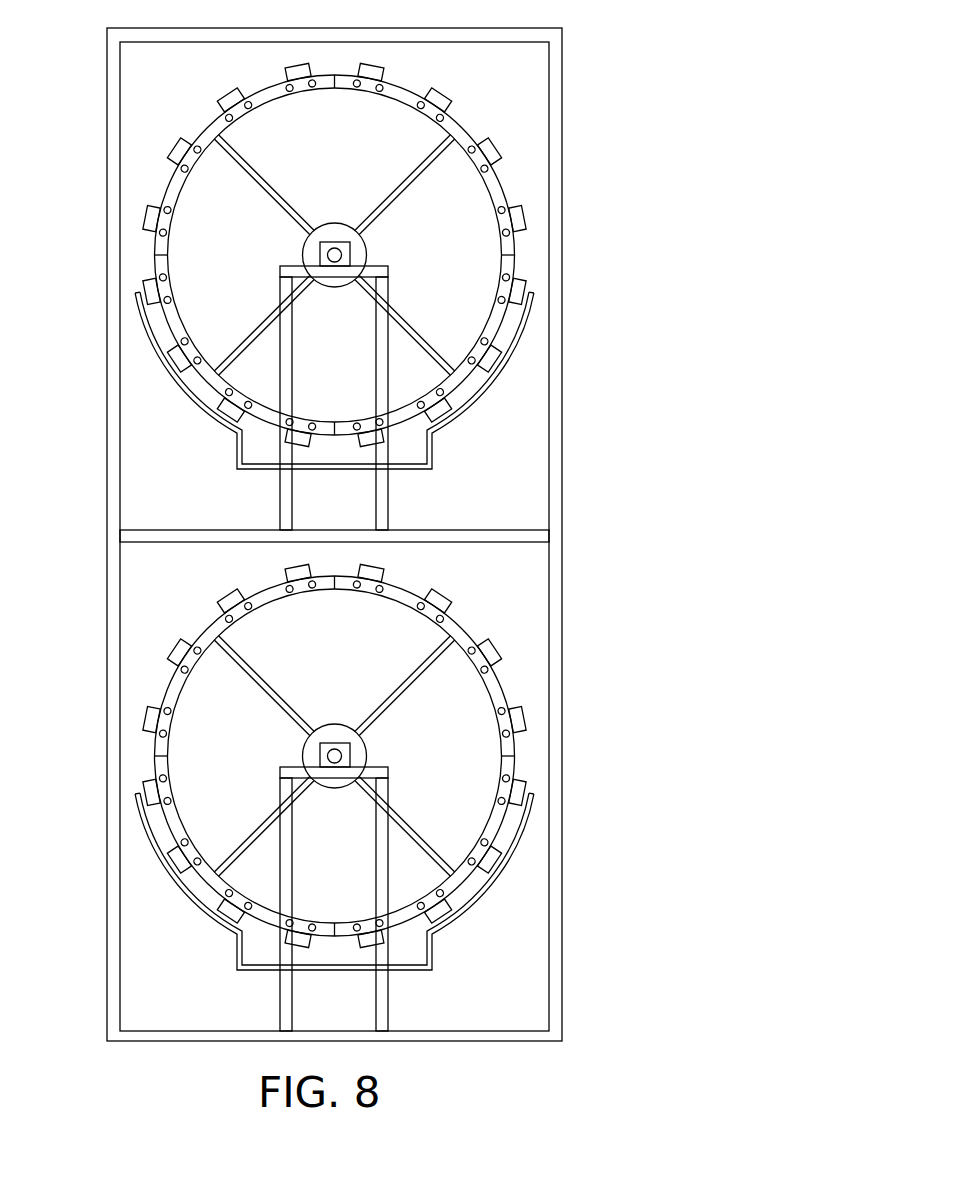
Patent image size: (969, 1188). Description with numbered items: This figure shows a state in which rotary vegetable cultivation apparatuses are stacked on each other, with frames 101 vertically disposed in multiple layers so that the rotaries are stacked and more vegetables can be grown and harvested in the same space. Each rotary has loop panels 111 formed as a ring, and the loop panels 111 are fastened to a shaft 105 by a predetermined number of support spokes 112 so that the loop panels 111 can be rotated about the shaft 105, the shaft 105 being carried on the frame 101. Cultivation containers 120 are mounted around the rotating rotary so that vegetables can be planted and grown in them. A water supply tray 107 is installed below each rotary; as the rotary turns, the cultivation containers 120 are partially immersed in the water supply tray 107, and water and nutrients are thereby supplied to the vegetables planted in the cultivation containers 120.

The frame 101 is at (280, 497).
The shaft 105 is at (345, 252).
The water supply tray 107 is at (432, 450).
The loop panels 111 is at (467, 120).
The support spokes 112 is at (407, 188).
The cultivation containers 120 is at (172, 146).